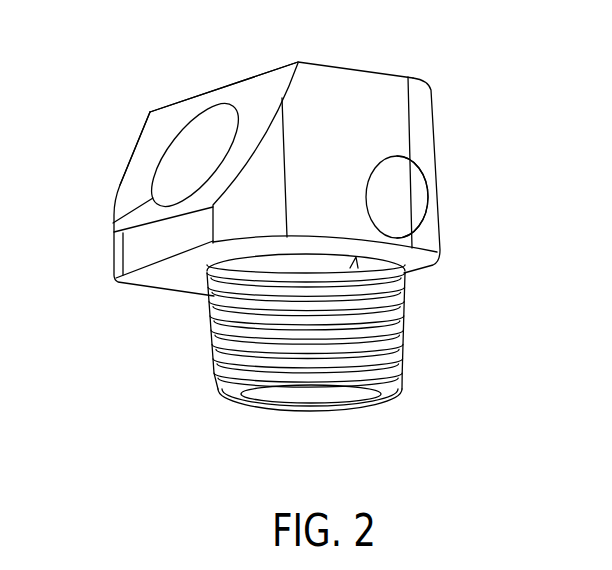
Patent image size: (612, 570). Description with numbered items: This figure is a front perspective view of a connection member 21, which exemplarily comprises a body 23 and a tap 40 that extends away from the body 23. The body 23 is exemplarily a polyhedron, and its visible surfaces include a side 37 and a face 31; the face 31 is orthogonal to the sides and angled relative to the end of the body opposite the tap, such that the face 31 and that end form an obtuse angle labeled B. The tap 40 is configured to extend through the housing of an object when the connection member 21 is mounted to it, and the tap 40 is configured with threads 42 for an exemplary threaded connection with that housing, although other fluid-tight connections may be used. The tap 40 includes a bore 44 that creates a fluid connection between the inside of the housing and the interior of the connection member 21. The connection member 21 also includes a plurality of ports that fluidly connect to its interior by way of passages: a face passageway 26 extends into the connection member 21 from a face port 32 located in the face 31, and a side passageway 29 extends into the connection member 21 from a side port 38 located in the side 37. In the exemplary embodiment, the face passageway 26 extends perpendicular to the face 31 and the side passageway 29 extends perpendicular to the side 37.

The connection member 21 is at (308, 80).
The body 23 is at (102, 258).
The face passageway 26 is at (187, 175).
The side passageway 29 is at (412, 199).
The face 31 is at (162, 122).
The face port 32 is at (113, 223).
The side 37 is at (400, 130).
The side port 38 is at (428, 221).
The tap 40 is at (278, 367).
The threads 42 is at (390, 347).
The bore 44 is at (317, 387).